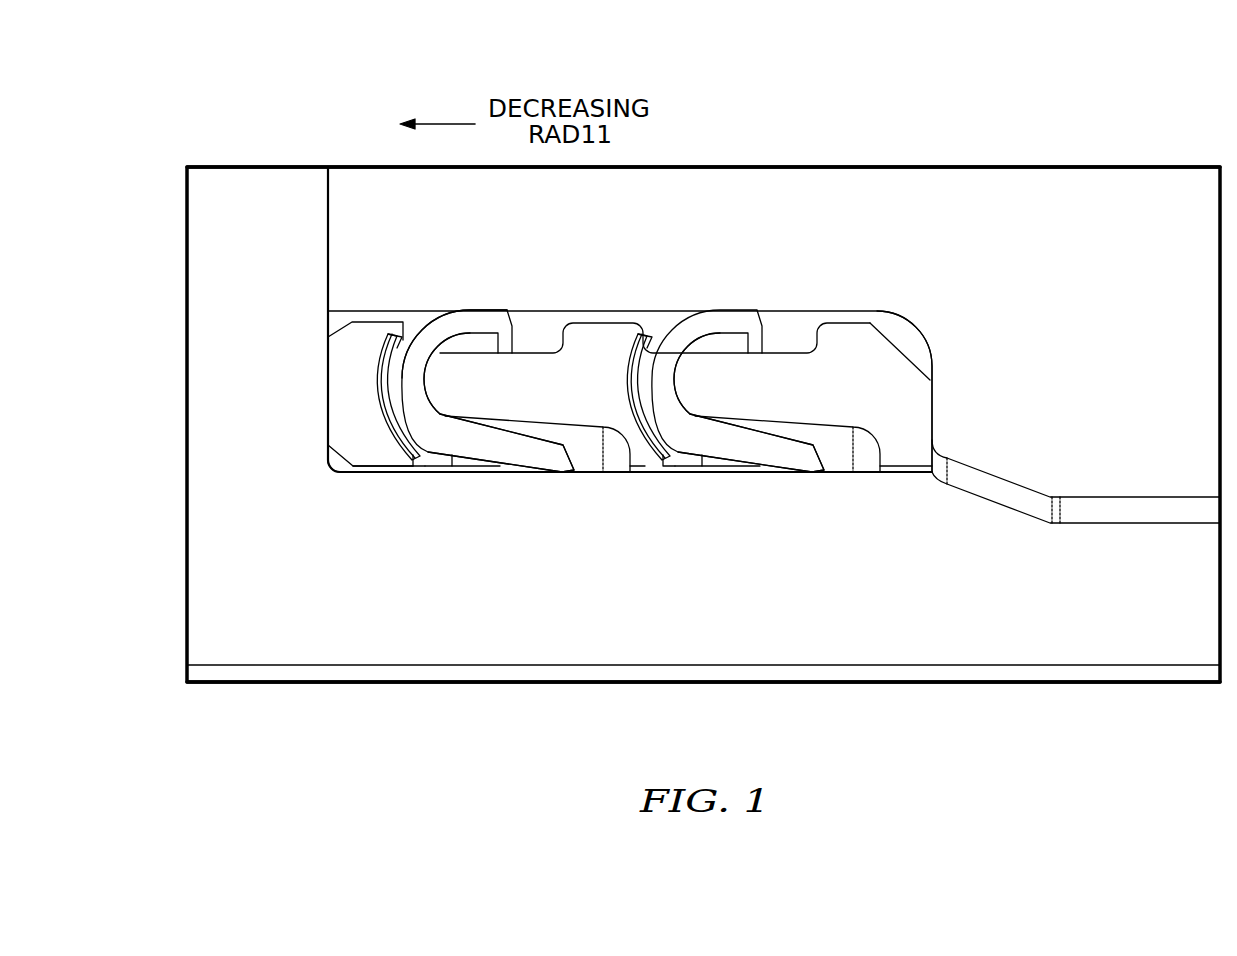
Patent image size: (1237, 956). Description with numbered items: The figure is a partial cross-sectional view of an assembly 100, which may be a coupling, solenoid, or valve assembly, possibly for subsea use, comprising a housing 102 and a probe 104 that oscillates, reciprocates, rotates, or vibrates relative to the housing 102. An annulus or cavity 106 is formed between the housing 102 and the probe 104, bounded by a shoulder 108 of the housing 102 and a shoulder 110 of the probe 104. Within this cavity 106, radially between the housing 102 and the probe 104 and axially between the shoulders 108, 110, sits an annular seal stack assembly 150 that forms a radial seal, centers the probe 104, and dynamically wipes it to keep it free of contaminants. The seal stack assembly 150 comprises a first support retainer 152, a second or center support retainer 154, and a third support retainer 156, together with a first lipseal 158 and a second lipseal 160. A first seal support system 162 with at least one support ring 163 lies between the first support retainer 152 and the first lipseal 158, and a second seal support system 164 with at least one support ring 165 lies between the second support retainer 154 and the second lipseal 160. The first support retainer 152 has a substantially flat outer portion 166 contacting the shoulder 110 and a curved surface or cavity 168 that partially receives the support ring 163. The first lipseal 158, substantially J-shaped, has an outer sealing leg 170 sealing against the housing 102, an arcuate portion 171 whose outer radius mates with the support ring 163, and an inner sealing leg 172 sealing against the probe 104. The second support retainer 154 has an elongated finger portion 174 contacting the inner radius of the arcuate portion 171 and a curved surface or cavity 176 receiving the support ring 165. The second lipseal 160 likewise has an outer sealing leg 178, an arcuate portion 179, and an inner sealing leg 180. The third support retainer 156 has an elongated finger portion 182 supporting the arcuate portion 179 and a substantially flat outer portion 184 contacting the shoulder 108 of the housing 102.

The assembly 100 is at (1100, 95).
The housing 102 is at (738, 166).
The probe 104 is at (403, 667).
The annulus or cavity 106 is at (545, 327).
The shoulder 108 is at (931, 416).
The shoulder 110 is at (336, 390).
The annular seal stack assembly 150 is at (424, 318).
The first support retainer 152 is at (368, 472).
The second support retainer 154 is at (638, 472).
The third support retainer 156 is at (897, 472).
The first lipseal 158 is at (487, 472).
The second lipseal 160 is at (755, 472).
The first seal support system 162 is at (423, 472).
The support ring 163 is at (442, 472).
The second seal support system 164 is at (682, 472).
The support ring 165 is at (700, 472).
The substantially flat outer portion 166 is at (327, 435).
The curved surface or cavity 168 is at (380, 352).
The outer sealing leg 170 is at (490, 311).
The arcuate portion 171 is at (413, 335).
The inner sealing leg 172 is at (560, 473).
The elongated finger portion 174 is at (428, 384).
The curved surface or cavity 176 is at (634, 378).
The outer sealing leg 178 is at (743, 317).
The arcuate portion 179 is at (668, 333).
The inner sealing leg 180 is at (805, 474).
The elongated finger portion 182 is at (676, 372).
The substantially flat outer portion 184 is at (935, 428).